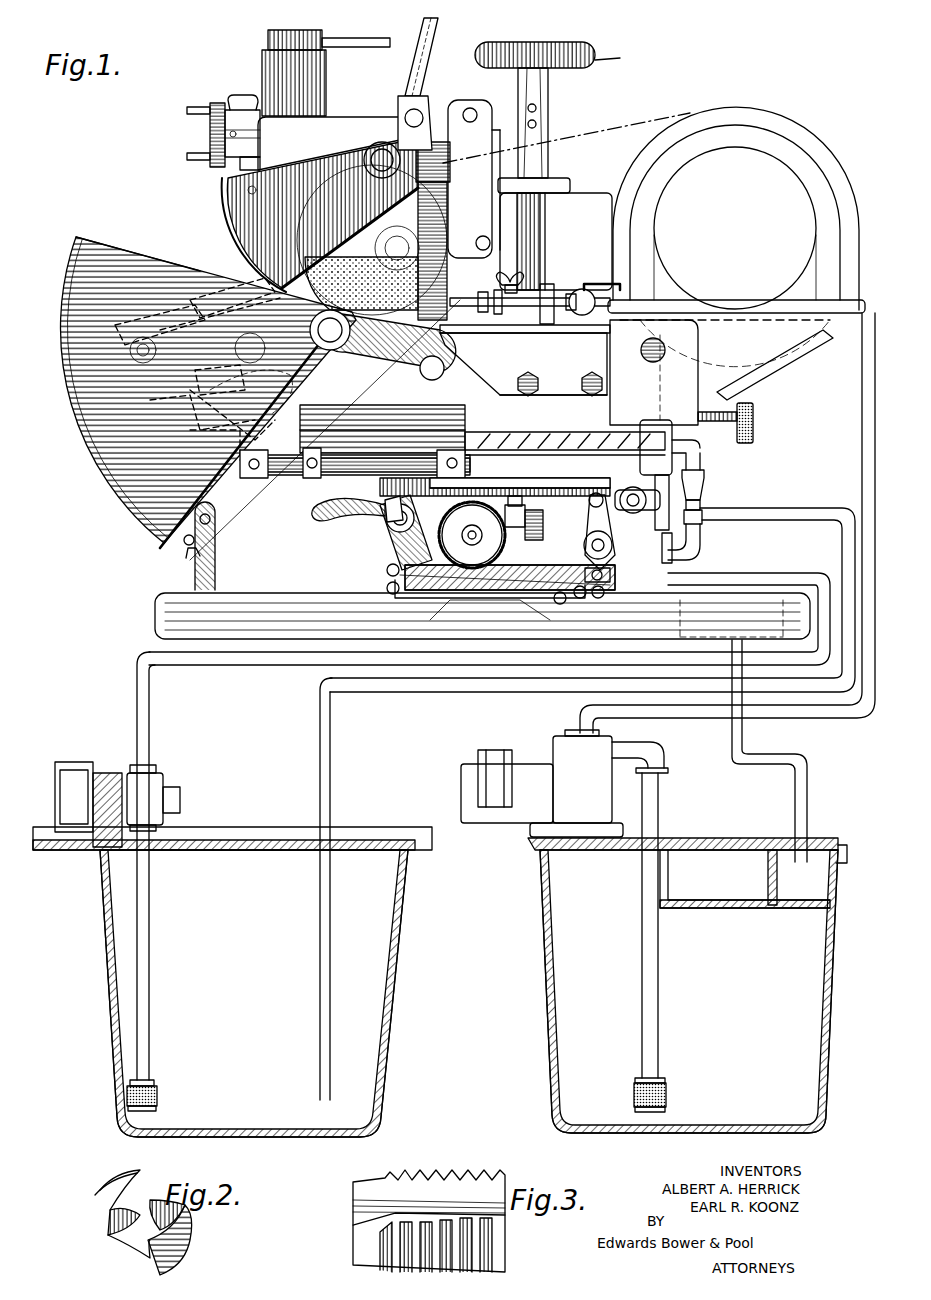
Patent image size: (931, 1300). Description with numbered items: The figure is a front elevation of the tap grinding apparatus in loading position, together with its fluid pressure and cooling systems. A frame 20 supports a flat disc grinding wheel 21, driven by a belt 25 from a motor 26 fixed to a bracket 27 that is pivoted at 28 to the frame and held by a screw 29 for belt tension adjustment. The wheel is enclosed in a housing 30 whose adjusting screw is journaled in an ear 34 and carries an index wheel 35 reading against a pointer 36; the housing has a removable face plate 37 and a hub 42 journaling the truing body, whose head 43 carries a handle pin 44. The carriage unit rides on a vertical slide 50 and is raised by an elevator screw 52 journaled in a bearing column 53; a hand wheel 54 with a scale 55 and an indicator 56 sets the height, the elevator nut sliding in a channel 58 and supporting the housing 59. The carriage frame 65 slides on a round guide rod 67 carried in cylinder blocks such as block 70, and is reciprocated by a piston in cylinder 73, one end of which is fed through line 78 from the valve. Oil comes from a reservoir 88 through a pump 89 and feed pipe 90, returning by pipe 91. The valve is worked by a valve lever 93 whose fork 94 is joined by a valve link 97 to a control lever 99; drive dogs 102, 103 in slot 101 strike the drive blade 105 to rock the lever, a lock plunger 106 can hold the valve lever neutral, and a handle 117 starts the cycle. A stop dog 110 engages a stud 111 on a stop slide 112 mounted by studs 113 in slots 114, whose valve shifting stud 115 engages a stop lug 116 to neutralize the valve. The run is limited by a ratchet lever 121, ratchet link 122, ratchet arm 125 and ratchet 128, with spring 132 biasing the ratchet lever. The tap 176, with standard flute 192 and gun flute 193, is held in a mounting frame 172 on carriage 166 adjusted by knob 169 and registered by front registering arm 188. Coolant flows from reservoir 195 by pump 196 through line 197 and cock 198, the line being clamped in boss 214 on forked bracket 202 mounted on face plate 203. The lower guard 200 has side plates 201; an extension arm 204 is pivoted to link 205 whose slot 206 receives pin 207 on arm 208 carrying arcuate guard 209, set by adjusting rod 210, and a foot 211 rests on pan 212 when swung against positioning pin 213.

In FIG. 1, the frame 20 is at (657, 405).
In FIG. 1, the grinding wheel 21 is at (312, 274).
In FIG. 1, the belt 25 is at (605, 122).
In FIG. 1, the motor 26 is at (736, 208).
In FIG. 1, the bracket 27 is at (775, 348).
In FIG. 1, the pivot 28 is at (650, 360).
In FIG. 1, the screw 29 is at (754, 422).
In FIG. 1, the housing 30 is at (350, 118).
In FIG. 1, the ear 34 is at (250, 110).
In FIG. 1, the index wheel 35 is at (210, 122).
In FIG. 1, the pointer 36 is at (232, 98).
In FIG. 1, the face plate 37 is at (329, 143).
In FIG. 1, the hub 42 is at (268, 60).
In FIG. 1, the head 43 is at (290, 38).
In FIG. 1, the handle pin 44 is at (358, 40).
In FIG. 1, the vertical slide 50 is at (572, 200).
In FIG. 1, the elevator screw 52 is at (540, 242).
In FIG. 1, the bearing column 53 is at (549, 120).
In FIG. 1, the hand wheel 54 is at (565, 46).
In FIG. 1, the scale 55 is at (618, 57).
In FIG. 1, the indicator 56 is at (548, 90).
In FIG. 1, the channel 58 is at (546, 216).
In FIG. 1, the housing 59 is at (680, 567).
In FIG. 1, the carriage frame 65 is at (382, 429).
In FIG. 1, the front round guide rod 67 is at (585, 434).
In FIG. 1, the cylinder block 70 is at (648, 428).
In FIG. 1, the cylinder 73 is at (540, 434).
In FIG. 1, the line 78 is at (704, 486).
In FIG. 1, the reservoir 88 is at (118, 935).
In FIG. 1, the pump 89 is at (165, 790).
In FIG. 1, the feed pipe 90 is at (150, 697).
In FIG. 1, the return pipe 91 is at (331, 744).
In FIG. 1, the valve lever 93 is at (592, 528).
In FIG. 1, the fork 94 is at (608, 570).
In FIG. 1, the valve link 97 is at (510, 577).
In FIG. 1, the control lever 99 is at (398, 540).
In FIG. 1, the slot 101 is at (350, 458).
In FIG. 1, the drive dog 102 is at (258, 478).
In FIG. 1, the drive dog 103 is at (310, 478).
In FIG. 1, the drive blade 105 is at (382, 441).
In FIG. 1, the lock plunger 106 is at (602, 590).
In FIG. 1, the stop dog 110 is at (452, 455).
In FIG. 1, the stud 111 is at (462, 470).
In FIG. 1, the stop slide 112 is at (550, 487).
In FIG. 1, the studs 113 is at (660, 522).
In FIG. 1, the slots 114 is at (645, 506).
In FIG. 1, the valve shifting stud 115 is at (624, 492).
In FIG. 1, the stop lug 116 is at (592, 496).
In FIG. 1, the handle 117 is at (324, 506).
In FIG. 1, the ratchet lever 121 is at (470, 585).
In FIG. 1, the ratchet link 122 is at (490, 612).
In FIG. 1, the ratchet arm 125 is at (512, 510).
In FIG. 1, the ratchet 128 is at (472, 535).
In FIG. 1, the spring 132 is at (565, 600).
In FIG. 1, the carriage 166 is at (195, 440).
In FIG. 1, the knob 169 is at (260, 395).
In FIG. 1, the mounting frame 172 is at (240, 311).
In FIG. 1, the tap 176 is at (232, 330).
In FIG. 2, the tap 176 is at (192, 1258).
In FIG. 3, the tap 176 is at (486, 1240).
In FIG. 1, the front registering arm 188 is at (318, 400).
In FIG. 2, the standard flute 192 is at (118, 1178).
In FIG. 3, the standard flute 192 is at (445, 1185).
In FIG. 2, the gun flute 193 is at (178, 1212).
In FIG. 3, the gun flute 193 is at (360, 1222).
In FIG. 1, the reservoir 195 is at (575, 942).
In FIG. 1, the pump 196 is at (565, 745).
In FIG. 1, the line 197 is at (860, 390).
In FIG. 1, the cock 198 is at (535, 292).
In FIG. 1, the lower guard 200 is at (82, 425).
In FIG. 1, the side plates 201 is at (135, 262).
In FIG. 1, the forked bracket 202 is at (525, 360).
In FIG. 1, the face plate 203 is at (541, 407).
In FIG. 1, the extension arm 204 is at (430, 450).
In FIG. 1, the link 205 is at (460, 128).
In FIG. 1, the slot 206 is at (395, 200).
In FIG. 1, the pin 207 is at (446, 165).
In FIG. 1, the arm 208 is at (408, 115).
In FIG. 1, the arcuate guard 209 is at (225, 200).
In FIG. 1, the threaded adjusting rod 210 is at (438, 45).
In FIG. 1, the latch bar or foot 211 is at (216, 548).
In FIG. 1, the pan 212 is at (156, 612).
In FIG. 1, the positioning pin 213 is at (185, 555).
In FIG. 1, the boss 214 is at (505, 285).